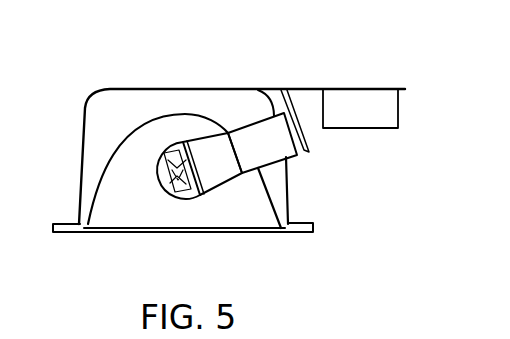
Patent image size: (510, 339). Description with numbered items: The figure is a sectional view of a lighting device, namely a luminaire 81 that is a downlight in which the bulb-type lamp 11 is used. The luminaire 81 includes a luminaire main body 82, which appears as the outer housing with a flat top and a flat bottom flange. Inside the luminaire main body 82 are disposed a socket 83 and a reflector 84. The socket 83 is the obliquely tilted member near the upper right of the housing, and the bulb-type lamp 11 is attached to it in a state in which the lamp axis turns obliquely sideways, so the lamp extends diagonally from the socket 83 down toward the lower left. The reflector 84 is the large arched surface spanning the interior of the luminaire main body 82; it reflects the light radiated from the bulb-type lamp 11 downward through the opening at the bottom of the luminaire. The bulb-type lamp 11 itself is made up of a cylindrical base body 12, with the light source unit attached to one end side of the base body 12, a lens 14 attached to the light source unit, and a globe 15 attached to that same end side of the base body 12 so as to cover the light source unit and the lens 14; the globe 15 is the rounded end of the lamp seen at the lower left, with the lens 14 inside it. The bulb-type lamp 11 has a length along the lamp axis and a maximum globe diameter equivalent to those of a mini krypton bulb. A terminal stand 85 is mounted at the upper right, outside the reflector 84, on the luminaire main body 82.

The luminaire 81 is at (78, 52).
The luminaire main body 82 is at (123, 89).
The socket 83 is at (289, 150).
The reflector 84 is at (110, 157).
The terminal stand 85 is at (388, 111).
The bulb-type lamp 11 is at (189, 210).
The base body 12 is at (222, 184).
The lens 14 is at (174, 193).
The globe 15 is at (163, 176).